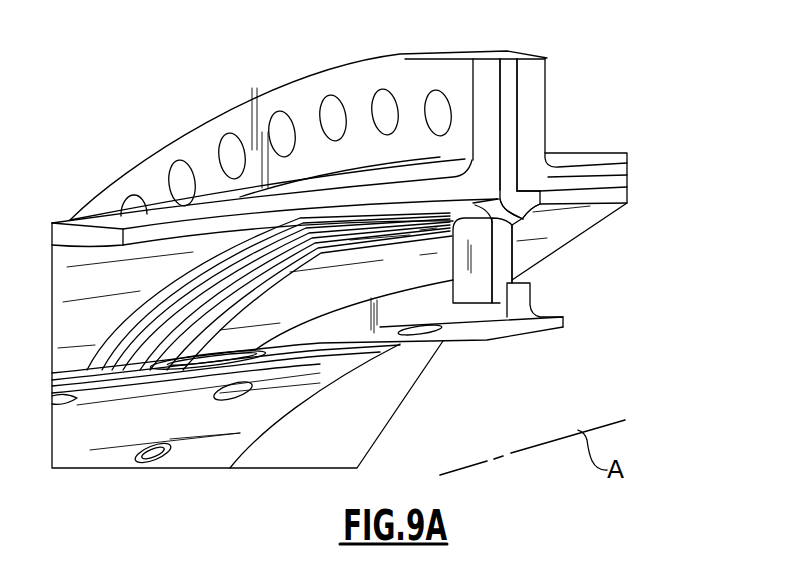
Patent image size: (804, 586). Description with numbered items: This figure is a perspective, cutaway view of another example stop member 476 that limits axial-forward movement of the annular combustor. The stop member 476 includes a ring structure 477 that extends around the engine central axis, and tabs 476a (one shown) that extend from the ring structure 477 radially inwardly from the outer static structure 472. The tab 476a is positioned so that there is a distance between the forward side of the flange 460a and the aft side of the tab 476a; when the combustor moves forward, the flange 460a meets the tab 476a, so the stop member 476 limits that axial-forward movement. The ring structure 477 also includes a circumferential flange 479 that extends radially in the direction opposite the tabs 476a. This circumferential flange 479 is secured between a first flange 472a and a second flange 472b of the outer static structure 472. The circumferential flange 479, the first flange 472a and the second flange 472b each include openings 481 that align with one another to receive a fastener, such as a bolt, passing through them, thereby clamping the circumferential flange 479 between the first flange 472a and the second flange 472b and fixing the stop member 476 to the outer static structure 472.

The outer static structure 472 is at (397, 165).
The openings 481 is at (443, 100).
The first flange 472a is at (481, 80).
The second flange 472b is at (535, 70).
The circumferential flange 479 is at (512, 105).
The ring structure 477 is at (533, 193).
The stop member 476 is at (495, 268).
The flange 460a is at (527, 292).
The tabs 476a is at (497, 295).